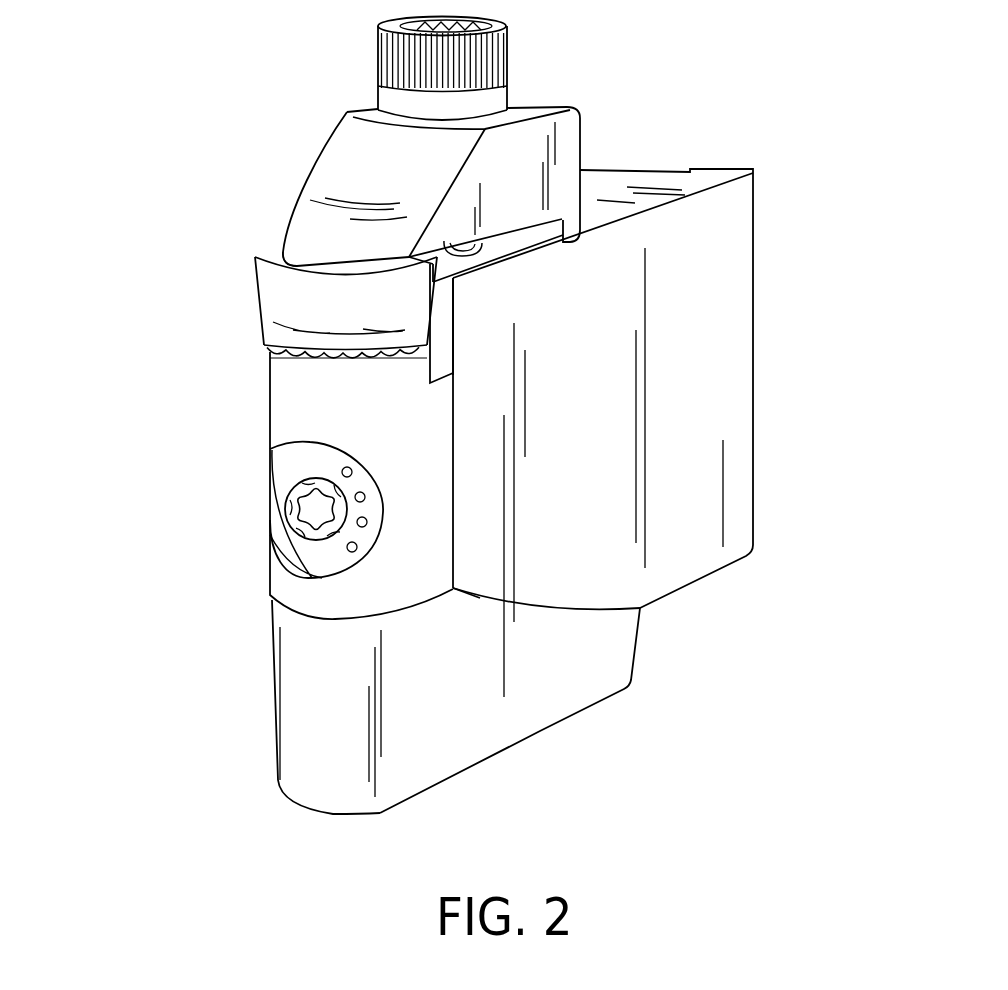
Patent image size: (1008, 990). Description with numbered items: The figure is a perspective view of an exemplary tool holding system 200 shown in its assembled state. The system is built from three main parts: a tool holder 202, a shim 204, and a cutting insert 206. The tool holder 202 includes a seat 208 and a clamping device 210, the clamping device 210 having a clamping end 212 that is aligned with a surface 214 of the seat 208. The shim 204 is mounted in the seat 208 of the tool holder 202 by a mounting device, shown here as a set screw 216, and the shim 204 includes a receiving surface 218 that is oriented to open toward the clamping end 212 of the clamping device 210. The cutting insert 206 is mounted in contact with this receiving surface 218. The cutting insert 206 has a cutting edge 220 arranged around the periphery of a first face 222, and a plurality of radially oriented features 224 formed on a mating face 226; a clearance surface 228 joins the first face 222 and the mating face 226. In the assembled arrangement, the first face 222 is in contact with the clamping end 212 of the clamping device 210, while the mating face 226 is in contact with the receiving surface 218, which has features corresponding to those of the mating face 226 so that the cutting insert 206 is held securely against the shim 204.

The tool holding system 200 is at (772, 117).
The tool holder 202 is at (614, 192).
The shim 204 is at (252, 588).
The cutting insert 206 is at (238, 334).
The seat 208 is at (640, 608).
The clamping device 210 is at (363, 152).
The clamping end 212 is at (318, 225).
The surface of the seat 214 is at (373, 613).
The set screw 216 is at (287, 510).
The receiving surface 218 is at (330, 347).
The cutting edge 220 is at (256, 258).
The first face 222 is at (278, 258).
The radially oriented features 224 is at (330, 358).
The mating face 226 is at (350, 362).
The clearance surface 228 is at (280, 305).